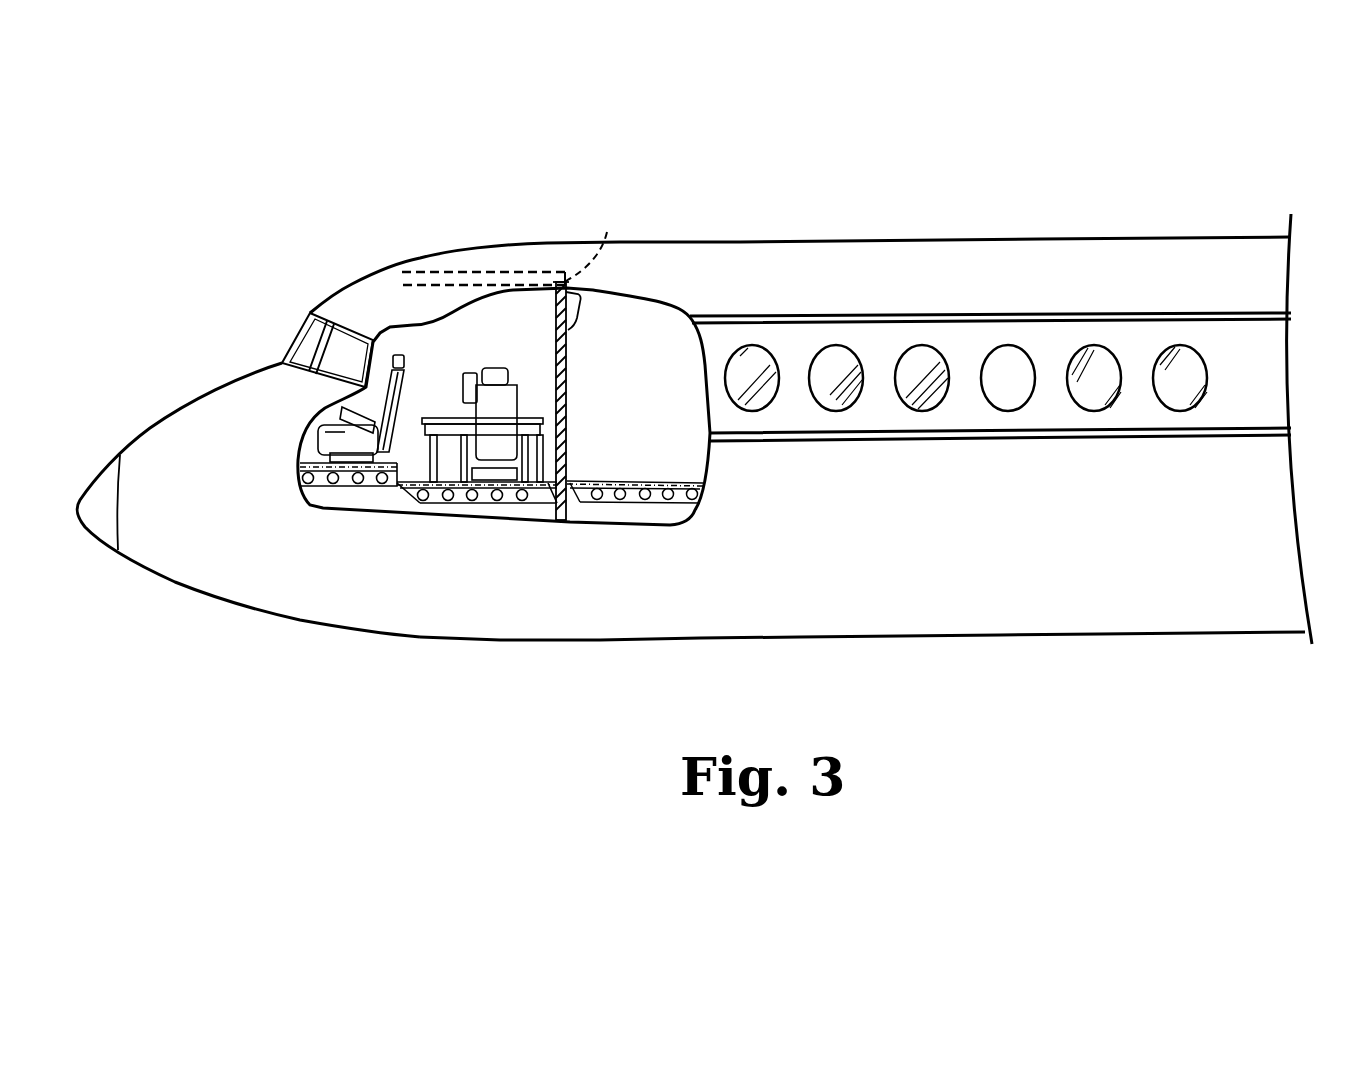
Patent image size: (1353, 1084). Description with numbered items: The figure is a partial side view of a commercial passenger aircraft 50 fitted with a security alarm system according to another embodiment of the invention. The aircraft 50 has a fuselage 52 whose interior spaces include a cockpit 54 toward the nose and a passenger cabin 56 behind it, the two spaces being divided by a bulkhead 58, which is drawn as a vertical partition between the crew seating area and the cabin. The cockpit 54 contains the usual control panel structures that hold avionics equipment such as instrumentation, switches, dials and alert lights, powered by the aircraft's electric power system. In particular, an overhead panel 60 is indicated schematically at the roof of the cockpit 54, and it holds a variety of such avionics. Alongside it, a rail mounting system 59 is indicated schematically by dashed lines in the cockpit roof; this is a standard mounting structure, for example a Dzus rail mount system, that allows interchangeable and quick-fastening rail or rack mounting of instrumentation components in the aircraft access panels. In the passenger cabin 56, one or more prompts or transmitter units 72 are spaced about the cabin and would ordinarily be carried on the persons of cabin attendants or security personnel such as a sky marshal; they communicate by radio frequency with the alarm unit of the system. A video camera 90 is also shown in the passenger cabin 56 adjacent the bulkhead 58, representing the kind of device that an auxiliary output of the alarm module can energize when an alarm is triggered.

The aircraft 50 is at (258, 300).
The fuselage 52 is at (195, 392).
The cockpit 54 is at (413, 415).
The passenger cabin 56 is at (670, 452).
The bulkhead 58 is at (568, 378).
The rail mounting system 59 is at (480, 279).
The overhead panel 60 is at (598, 241).
The transmitter units 72 is at (948, 472).
The video camera 90 is at (578, 296).